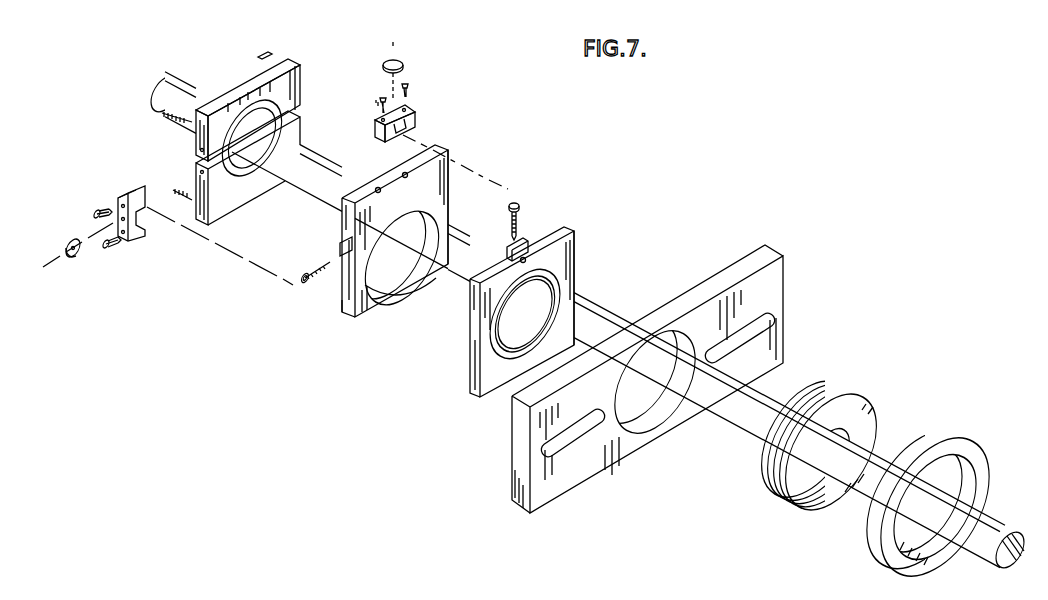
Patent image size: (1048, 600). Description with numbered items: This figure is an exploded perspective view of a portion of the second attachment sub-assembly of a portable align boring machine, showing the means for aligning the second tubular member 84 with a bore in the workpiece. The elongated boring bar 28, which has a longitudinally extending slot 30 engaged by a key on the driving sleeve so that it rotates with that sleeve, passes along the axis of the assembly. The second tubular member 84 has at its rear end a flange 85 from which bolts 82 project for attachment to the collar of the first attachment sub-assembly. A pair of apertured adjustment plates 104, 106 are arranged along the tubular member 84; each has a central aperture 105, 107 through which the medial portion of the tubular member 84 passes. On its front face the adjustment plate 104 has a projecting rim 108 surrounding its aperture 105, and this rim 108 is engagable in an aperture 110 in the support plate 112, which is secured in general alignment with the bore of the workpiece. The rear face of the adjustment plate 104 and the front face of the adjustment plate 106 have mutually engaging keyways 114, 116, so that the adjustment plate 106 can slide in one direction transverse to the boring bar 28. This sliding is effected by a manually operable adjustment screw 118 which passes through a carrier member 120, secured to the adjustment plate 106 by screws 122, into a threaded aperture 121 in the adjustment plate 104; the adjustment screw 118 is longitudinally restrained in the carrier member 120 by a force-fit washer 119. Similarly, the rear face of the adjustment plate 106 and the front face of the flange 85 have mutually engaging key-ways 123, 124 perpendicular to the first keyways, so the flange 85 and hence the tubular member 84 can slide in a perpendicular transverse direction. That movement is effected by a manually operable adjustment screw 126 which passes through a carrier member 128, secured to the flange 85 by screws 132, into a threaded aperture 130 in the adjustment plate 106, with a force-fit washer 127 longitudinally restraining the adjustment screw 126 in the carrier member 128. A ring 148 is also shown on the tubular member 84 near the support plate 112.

The boring bar 28 is at (582, 318).
The longitudinal extending slot 30 is at (326, 158).
The bolts 82 is at (265, 58).
The second tubular member 84 is at (800, 410).
The flange 85 is at (235, 88).
The adjustment plate 104 is at (567, 252).
The central aperture 105 is at (493, 348).
The adjustment plate 106 is at (438, 144).
The central aperture 107 is at (406, 283).
The projecting rim 108 is at (503, 363).
The aperture 110 is at (657, 418).
The support plate 112 is at (697, 293).
The keyway 114 is at (560, 228).
The keyway 116 is at (448, 152).
The adjustment screw 118 is at (517, 195).
The force-fit washer 119 is at (550, 213).
The carrier member 120 is at (417, 118).
The threaded aperture 121 is at (510, 246).
The screws 122 is at (384, 97).
The key way 123 is at (336, 301).
The key way 124 is at (297, 67).
The adjustment screw 126 is at (308, 284).
The force-fit washer 127 is at (306, 272).
The carrier member 128 is at (123, 188).
The threaded aperture 130 is at (340, 249).
The screws 132 is at (94, 217).
The ring 148 is at (935, 447).